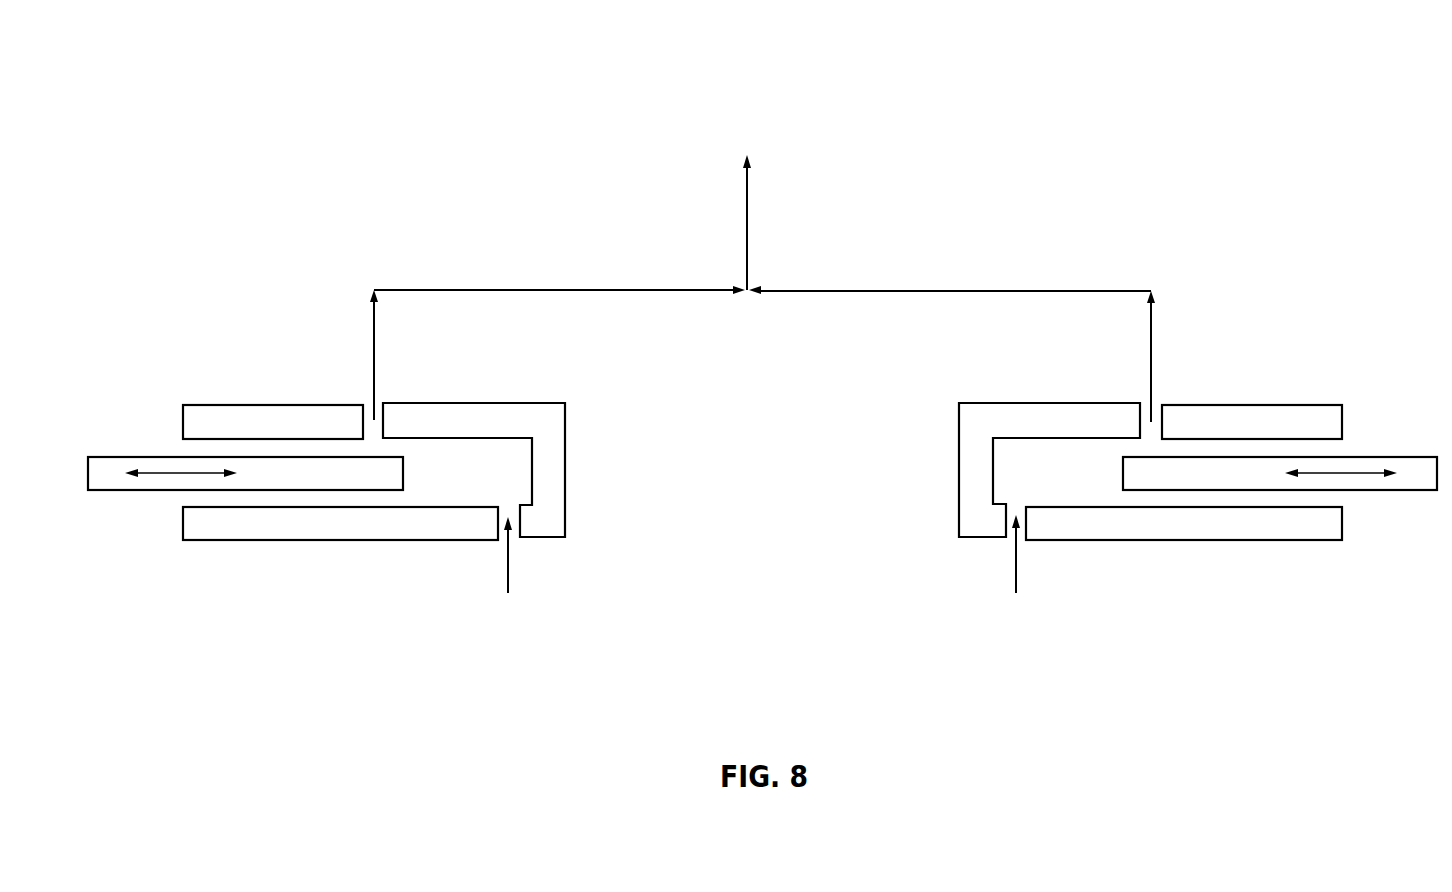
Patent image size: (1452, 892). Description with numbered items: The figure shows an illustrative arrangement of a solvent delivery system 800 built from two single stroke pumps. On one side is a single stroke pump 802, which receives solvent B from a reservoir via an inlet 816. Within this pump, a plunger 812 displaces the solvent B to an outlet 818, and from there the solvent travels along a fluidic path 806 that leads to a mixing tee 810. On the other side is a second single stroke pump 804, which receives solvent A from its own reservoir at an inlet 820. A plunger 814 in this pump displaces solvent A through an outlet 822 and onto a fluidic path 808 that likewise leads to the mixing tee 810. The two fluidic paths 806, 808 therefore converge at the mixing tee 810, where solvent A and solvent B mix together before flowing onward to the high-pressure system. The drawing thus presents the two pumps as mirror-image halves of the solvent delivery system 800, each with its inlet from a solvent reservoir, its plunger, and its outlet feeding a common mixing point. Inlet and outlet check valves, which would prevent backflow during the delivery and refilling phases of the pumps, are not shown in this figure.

The solvent delivery system 800 is at (338, 176).
The single stroke pump 802 is at (966, 418).
The single stroke pump 804 is at (515, 415).
The fluidic path 806 is at (1095, 290).
The fluidic path 808 is at (474, 290).
The mixing tee 810 is at (745, 340).
The plunger 812 is at (1405, 457).
The plunger 814 is at (121, 457).
The inlet 816 is at (1010, 535).
The outlet 818 is at (1162, 405).
The inlet 820 is at (512, 530).
The outlet 822 is at (383, 403).